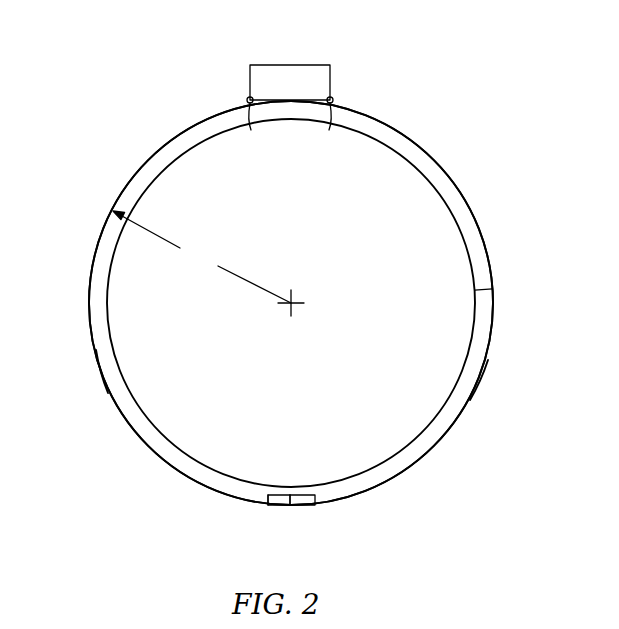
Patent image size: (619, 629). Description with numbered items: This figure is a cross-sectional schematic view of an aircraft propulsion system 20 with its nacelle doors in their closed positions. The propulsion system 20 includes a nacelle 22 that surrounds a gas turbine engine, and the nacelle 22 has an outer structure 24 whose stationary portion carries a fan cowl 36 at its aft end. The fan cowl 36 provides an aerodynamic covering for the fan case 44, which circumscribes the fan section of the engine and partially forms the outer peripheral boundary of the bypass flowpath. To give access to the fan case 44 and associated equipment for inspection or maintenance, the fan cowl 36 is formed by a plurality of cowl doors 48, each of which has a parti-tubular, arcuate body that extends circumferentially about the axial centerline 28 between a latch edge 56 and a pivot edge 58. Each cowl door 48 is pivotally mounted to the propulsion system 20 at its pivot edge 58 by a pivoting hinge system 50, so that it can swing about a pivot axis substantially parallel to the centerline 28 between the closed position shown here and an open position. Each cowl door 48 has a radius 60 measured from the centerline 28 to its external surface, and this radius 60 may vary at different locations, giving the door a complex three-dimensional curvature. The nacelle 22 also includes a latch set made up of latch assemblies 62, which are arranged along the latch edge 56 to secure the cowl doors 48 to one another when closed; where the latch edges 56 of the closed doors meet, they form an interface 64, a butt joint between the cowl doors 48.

The aircraft propulsion system 20 is at (500, 123).
The nacelle 22 is at (393, 123).
The outer structure 24 is at (291, 303).
The axial centerline 28 is at (291, 303).
The fan cowl 36 is at (172, 135).
The fan case 44 is at (493, 289).
The cowl door 48 is at (488, 360).
The pivoting hinge system 50 is at (247, 98).
The latch edge 56 is at (290, 505).
The pivot edge 58 is at (251, 130).
The radius 60 is at (202, 257).
The latch assembly 62 is at (264, 498).
The interface 64 is at (283, 516).